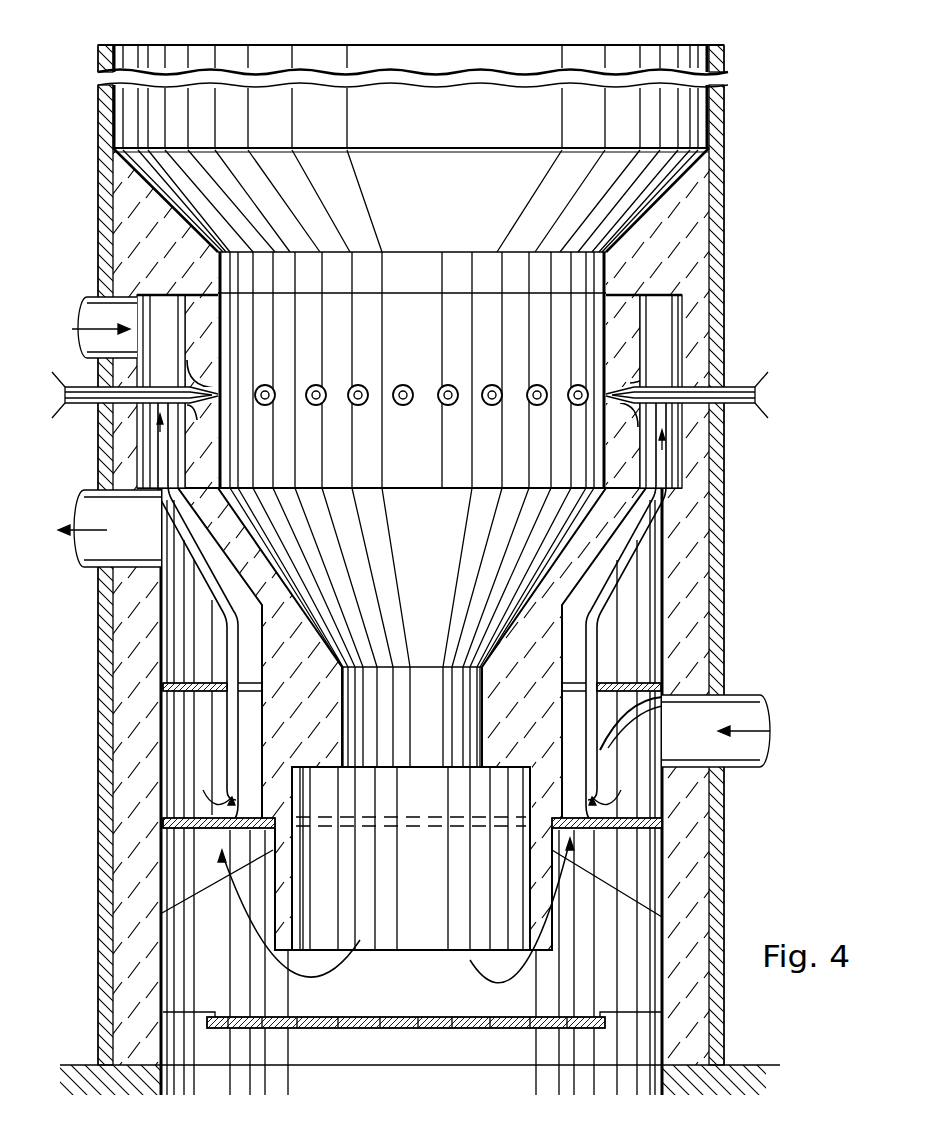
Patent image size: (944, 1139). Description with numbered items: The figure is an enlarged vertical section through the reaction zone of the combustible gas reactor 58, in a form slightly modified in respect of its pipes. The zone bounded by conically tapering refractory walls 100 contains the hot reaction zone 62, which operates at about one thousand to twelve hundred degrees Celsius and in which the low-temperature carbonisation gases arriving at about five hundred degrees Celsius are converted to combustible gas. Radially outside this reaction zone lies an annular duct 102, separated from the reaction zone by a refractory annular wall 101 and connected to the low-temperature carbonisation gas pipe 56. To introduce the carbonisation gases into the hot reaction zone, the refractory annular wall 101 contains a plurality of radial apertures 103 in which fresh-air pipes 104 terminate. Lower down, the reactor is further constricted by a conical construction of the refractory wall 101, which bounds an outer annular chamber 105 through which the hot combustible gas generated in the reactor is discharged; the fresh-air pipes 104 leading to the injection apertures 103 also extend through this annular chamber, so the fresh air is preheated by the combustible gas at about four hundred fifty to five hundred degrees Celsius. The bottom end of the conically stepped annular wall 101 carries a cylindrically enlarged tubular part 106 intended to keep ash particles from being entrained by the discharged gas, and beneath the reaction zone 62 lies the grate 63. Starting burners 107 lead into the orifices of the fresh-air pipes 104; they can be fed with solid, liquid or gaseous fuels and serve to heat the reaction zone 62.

The low-temperature carbonisation gas pipe 56 is at (750, 716).
The reactor 58 is at (735, 371).
The reaction zone 62 is at (426, 452).
The grate 63 is at (437, 1028).
The refractory walls 100 is at (175, 227).
The refractory annular wall 101 is at (205, 348).
The annular duct 102 is at (180, 349).
The radial apertures 103 is at (313, 402).
The fresh-air pipes 104 is at (232, 660).
The outer annular chamber 105 is at (634, 870).
The cylindrically enlarged tubular part 106 is at (538, 858).
The starting burners 107 is at (87, 395).